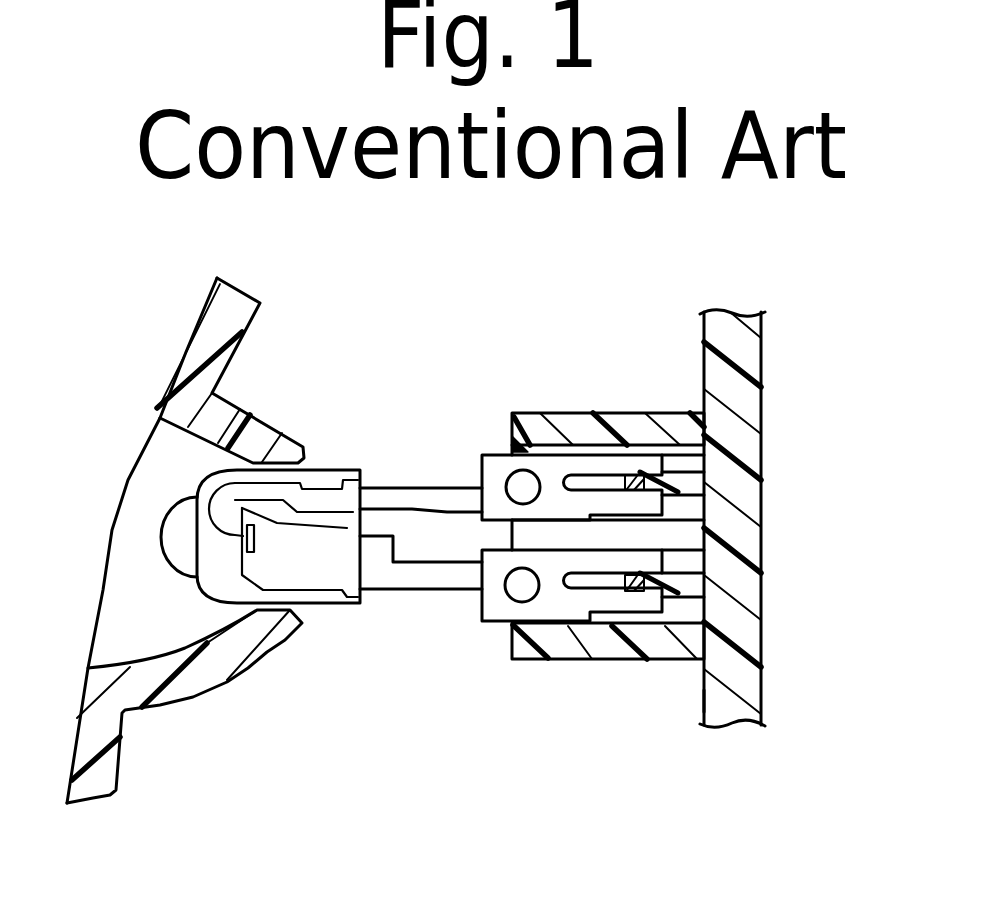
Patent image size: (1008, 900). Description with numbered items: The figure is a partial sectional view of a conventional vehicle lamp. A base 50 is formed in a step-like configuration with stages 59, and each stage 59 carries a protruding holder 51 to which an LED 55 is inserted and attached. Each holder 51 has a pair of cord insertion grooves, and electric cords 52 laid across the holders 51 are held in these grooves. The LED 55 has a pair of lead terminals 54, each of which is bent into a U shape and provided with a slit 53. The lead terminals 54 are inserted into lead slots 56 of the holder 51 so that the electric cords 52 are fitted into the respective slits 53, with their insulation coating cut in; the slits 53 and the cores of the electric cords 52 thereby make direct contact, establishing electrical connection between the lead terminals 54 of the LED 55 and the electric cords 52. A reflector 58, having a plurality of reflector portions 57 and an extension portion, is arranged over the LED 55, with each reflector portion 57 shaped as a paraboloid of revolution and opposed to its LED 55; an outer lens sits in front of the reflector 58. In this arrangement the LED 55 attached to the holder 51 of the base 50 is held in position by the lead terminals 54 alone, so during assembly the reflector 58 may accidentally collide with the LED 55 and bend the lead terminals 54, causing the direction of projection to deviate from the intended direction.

The base 50 is at (762, 443).
The holder 51 is at (535, 660).
The electric cord 52 is at (624, 475).
The slit 53 is at (587, 590).
The lead terminal 54 is at (428, 496).
The LED 55 is at (348, 466).
The lead slot 56 is at (512, 624).
The reflector portion 57 is at (200, 648).
The reflector 58 is at (185, 355).
The stage 59 is at (703, 700).